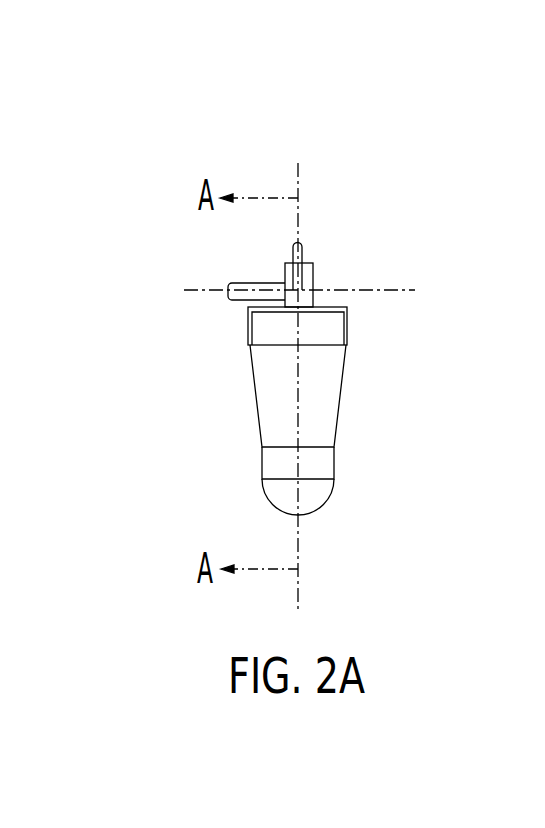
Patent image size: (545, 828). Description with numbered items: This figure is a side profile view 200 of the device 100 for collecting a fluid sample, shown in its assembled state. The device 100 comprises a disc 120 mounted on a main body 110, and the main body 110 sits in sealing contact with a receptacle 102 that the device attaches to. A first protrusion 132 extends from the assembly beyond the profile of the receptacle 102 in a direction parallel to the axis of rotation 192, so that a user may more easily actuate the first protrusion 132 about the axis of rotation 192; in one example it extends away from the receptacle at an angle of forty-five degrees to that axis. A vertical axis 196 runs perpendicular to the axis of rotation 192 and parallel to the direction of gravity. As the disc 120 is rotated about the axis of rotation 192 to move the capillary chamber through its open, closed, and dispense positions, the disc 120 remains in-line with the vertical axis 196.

The device 100 is at (201, 174).
The receptacle 102 is at (341, 386).
The main body 110 is at (313, 280).
The disc 120 is at (302, 250).
The first protrusion 132 is at (243, 283).
The axis of rotation 192 is at (184, 290).
The vertical axis 196 is at (300, 168).
The side profile view 200 is at (399, 191).